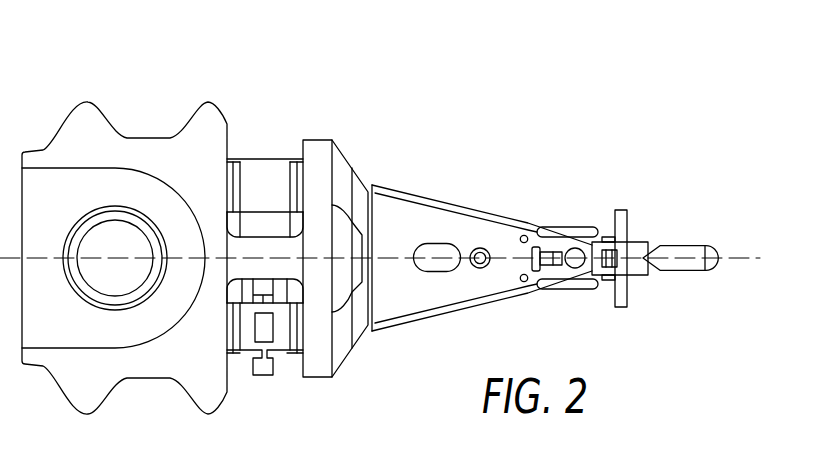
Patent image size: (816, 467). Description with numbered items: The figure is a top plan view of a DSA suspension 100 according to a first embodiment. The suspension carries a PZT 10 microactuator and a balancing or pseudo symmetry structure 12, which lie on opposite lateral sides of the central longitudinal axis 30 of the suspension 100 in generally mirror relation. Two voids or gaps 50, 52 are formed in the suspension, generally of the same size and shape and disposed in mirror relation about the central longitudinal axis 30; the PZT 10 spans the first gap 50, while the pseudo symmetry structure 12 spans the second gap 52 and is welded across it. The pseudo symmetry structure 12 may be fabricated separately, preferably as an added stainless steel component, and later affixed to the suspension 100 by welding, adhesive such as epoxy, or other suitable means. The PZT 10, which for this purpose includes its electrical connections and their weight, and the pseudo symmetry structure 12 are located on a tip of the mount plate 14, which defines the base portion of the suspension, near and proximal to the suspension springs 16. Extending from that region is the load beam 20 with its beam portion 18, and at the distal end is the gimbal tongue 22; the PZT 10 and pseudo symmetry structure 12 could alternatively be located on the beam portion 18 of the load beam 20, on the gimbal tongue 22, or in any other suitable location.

The DSA suspension 100 is at (398, 234).
The mount plate 14 is at (124, 378).
The first gap 50 is at (263, 220).
The second gap 52 is at (282, 297).
The pseudo symmetry structure 12 is at (247, 333).
The PZT 10 is at (282, 172).
The suspension springs 16 is at (339, 174).
The beam portion 18 is at (430, 199).
The load beam 20 is at (528, 158).
The gimbal tongue 22 is at (545, 250).
The central longitudinal axis 30 is at (748, 256).